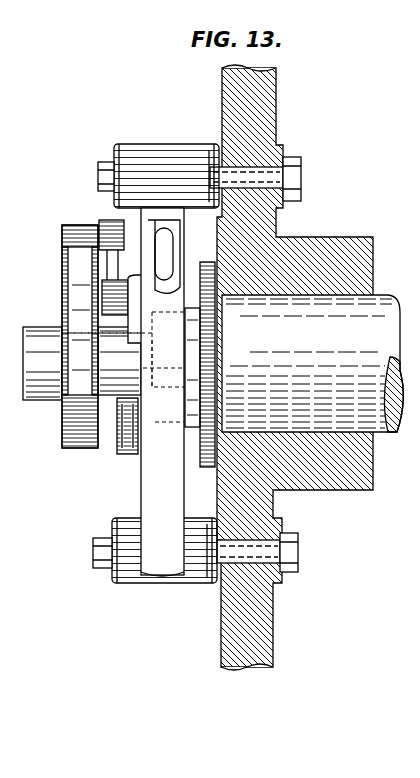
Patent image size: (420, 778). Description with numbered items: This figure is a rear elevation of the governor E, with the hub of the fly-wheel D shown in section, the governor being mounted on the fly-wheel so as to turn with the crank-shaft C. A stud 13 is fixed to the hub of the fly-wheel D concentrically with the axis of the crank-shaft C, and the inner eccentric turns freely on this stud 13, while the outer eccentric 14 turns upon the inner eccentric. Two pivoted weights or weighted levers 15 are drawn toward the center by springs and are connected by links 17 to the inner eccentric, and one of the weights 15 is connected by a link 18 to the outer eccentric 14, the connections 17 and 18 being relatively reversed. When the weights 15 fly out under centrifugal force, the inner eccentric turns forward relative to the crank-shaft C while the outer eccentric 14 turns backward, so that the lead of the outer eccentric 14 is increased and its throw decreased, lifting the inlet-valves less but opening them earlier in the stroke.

The fly-wheel D is at (295, 367).
The governor E is at (59, 195).
The crank-shaft C is at (312, 363).
The stud 13 is at (70, 363).
The outer eccentric 14 is at (72, 282).
The pivoted weights or weighted levers 15 is at (182, 229).
The links 17 is at (118, 440).
The link 18 is at (110, 270).